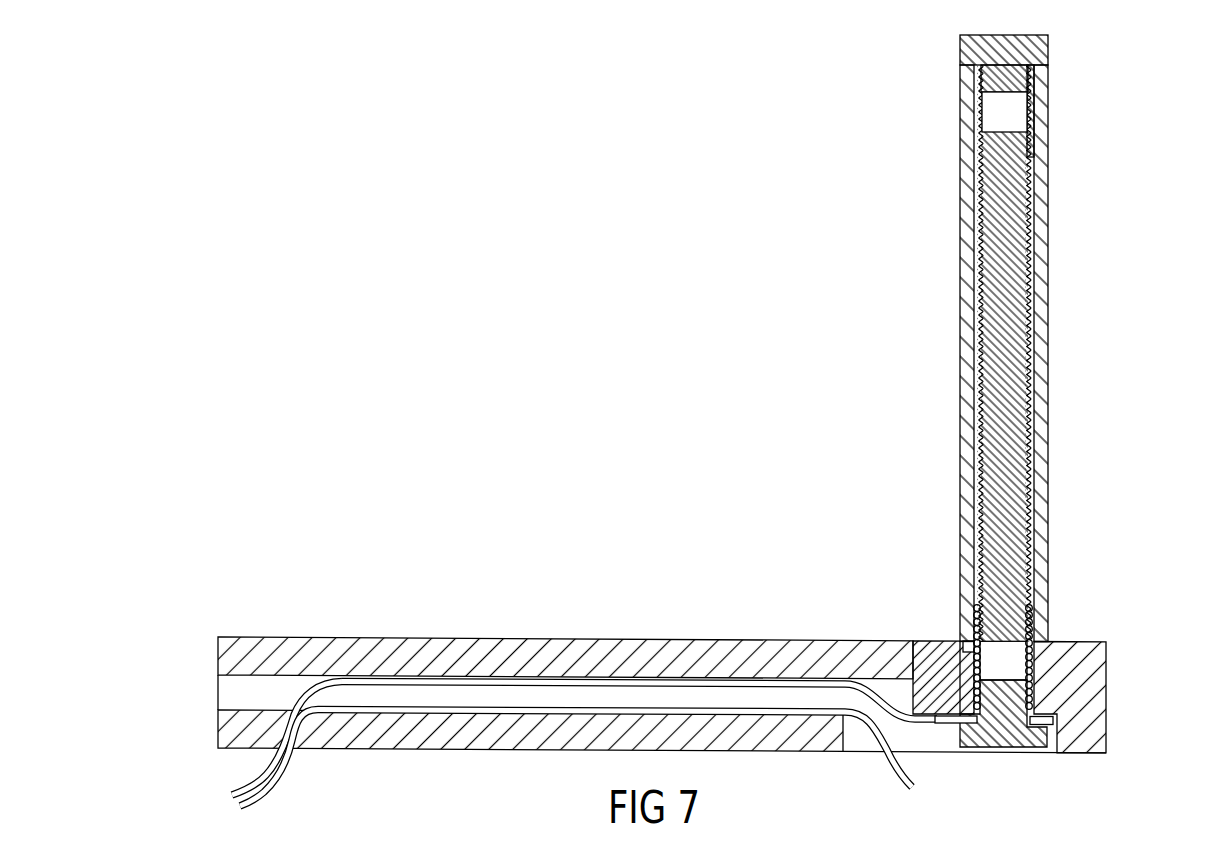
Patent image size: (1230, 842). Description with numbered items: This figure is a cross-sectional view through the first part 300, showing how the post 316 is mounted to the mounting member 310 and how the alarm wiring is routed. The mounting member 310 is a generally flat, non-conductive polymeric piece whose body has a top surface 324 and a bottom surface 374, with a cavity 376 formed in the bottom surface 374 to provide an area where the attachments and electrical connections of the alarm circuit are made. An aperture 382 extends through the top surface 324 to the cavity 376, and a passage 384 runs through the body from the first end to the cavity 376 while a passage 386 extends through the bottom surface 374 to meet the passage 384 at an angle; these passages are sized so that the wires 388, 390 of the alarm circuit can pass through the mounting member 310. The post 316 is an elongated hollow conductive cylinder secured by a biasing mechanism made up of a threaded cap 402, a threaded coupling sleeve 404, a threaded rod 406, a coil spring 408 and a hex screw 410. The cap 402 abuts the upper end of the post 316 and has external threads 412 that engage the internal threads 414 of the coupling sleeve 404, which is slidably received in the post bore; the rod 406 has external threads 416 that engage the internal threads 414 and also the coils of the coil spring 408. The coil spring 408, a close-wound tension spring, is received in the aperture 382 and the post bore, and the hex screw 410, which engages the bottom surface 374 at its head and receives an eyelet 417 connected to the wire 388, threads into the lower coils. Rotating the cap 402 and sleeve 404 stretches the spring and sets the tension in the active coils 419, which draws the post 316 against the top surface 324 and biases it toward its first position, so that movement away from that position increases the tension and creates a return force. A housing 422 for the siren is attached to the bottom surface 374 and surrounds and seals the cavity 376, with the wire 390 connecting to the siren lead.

The first part 300 is at (650, 423).
The mounting member 310 is at (627, 680).
The post 316 is at (960, 372).
The top surface 324 is at (497, 641).
The bottom surface 374 is at (423, 751).
The cavity 376 is at (862, 751).
The aperture 382 is at (1000, 650).
The passage 384 is at (228, 697).
The passage 386 is at (280, 707).
The wire 388 is at (248, 782).
The wire 390 is at (272, 790).
The threaded cap 402 is at (1044, 52).
The threaded coupling sleeve 404 is at (978, 135).
The threaded rod 406 is at (990, 222).
The coil spring 408 is at (975, 620).
The hex screw 410 is at (1010, 740).
The external threads 412 is at (988, 82).
The internal threads 414 is at (1015, 115).
The external threads 416 is at (1027, 257).
The eyelet 417 is at (1042, 716).
The active coils 419 is at (1032, 665).
The housing 422 is at (970, 705).